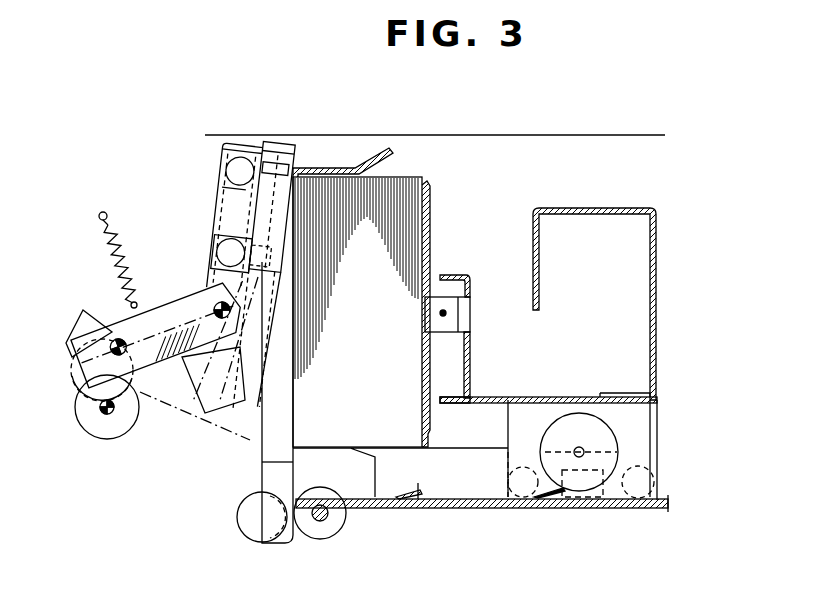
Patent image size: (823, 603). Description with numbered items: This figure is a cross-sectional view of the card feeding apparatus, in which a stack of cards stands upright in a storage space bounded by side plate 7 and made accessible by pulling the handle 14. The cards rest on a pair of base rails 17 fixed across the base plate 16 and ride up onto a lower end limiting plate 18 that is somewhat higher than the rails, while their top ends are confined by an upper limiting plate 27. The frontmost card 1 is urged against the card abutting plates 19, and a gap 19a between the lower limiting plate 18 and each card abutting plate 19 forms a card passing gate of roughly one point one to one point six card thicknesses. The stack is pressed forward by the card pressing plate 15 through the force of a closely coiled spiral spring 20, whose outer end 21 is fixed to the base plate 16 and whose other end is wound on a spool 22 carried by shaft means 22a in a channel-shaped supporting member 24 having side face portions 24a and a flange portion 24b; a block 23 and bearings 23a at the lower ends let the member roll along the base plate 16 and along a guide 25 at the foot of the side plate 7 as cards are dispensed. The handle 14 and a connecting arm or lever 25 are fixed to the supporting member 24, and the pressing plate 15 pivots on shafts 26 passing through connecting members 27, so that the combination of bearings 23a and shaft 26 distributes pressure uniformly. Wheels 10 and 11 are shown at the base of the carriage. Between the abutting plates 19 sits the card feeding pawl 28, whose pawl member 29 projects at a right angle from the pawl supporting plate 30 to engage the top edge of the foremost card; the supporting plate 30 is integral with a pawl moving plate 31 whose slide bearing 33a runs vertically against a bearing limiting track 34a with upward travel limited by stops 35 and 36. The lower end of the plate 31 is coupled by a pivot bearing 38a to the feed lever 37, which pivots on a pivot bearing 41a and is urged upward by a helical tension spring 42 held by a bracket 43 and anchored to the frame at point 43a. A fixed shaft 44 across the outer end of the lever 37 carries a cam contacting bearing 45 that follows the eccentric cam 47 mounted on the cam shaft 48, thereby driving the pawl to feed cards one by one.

The card 1 is at (408, 185).
The side plate 7 is at (551, 158).
The caster wheel 10 is at (325, 534).
The guide wheel 11 is at (244, 520).
The handle 14 is at (606, 208).
The card pressing plate 15 is at (430, 222).
The base plate 16 is at (431, 508).
The base rail 17 is at (418, 484).
The lower end limiting plate 18 is at (361, 488).
The card abutting plate 19 is at (268, 422).
The gap 19a is at (262, 462).
The closely coiled spiral spring 20 is at (459, 508).
The outer end 21 is at (400, 502).
The spool 22 is at (588, 440).
The shaft means 22a is at (577, 448).
The slide block 23 is at (578, 484).
The bearing 23a is at (519, 494).
The supporting member 24 is at (651, 440).
The side face portion 24a is at (656, 432).
The flange 24b is at (656, 400).
The connecting arm or lever 25 is at (466, 362).
The shaft 26 is at (446, 313).
The upper limiting plate 27 is at (330, 168).
The card feeding pawl 28 is at (244, 278).
The pawl member 29 is at (272, 207).
The pawl supporting plate 30 is at (277, 163).
The pawl moving plate 31 is at (234, 188).
The slide bearing 33a is at (239, 171).
The bearing limiting track 34a is at (241, 255).
The stop 35 is at (242, 151).
The stop 36 is at (230, 252).
The feed lever 37 is at (177, 320).
The pivot bearing 38a is at (222, 310).
The pivot bearing 41a is at (116, 340).
The helical tension spring 42 is at (106, 234).
The bracket or locking member 43 is at (137, 266).
The point 43a is at (104, 220).
The fixed shaft 44 is at (78, 384).
The cam contacting bearing 45 is at (84, 366).
The eccentric cam 47 is at (104, 440).
The cam shaft 48 is at (104, 408).